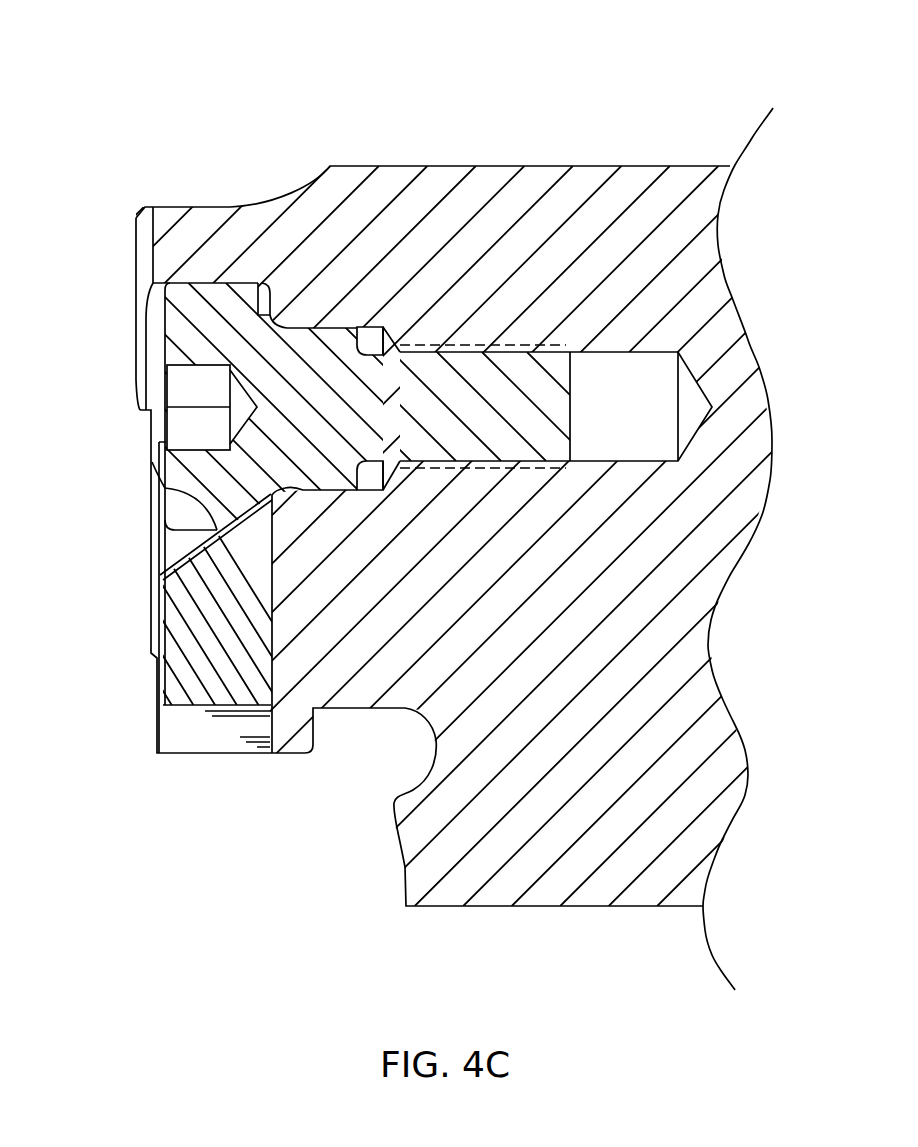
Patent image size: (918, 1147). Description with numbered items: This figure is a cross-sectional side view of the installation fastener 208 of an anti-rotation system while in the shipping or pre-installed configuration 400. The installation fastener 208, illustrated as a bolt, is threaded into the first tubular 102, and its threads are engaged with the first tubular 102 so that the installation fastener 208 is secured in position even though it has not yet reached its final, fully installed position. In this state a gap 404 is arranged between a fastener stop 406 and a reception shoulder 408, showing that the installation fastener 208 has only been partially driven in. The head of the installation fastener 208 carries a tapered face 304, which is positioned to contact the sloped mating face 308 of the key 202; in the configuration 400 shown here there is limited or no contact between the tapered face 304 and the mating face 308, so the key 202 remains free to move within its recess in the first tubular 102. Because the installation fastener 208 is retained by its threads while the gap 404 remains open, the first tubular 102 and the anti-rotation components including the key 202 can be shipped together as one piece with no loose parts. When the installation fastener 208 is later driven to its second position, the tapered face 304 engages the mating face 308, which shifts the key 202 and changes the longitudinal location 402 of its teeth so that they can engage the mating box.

The shipping or pre-installed configuration 400 is at (697, 77).
The longitudinal location 402 is at (379, 293).
The first tubular 102 is at (663, 287).
The installation fastener 208 is at (213, 327).
The reception shoulder 408 is at (393, 331).
The fastener stop 406 is at (358, 338).
The gap 404 is at (382, 362).
The tapered face 304 is at (182, 492).
The mating face 308 is at (207, 552).
The key 202 is at (200, 652).